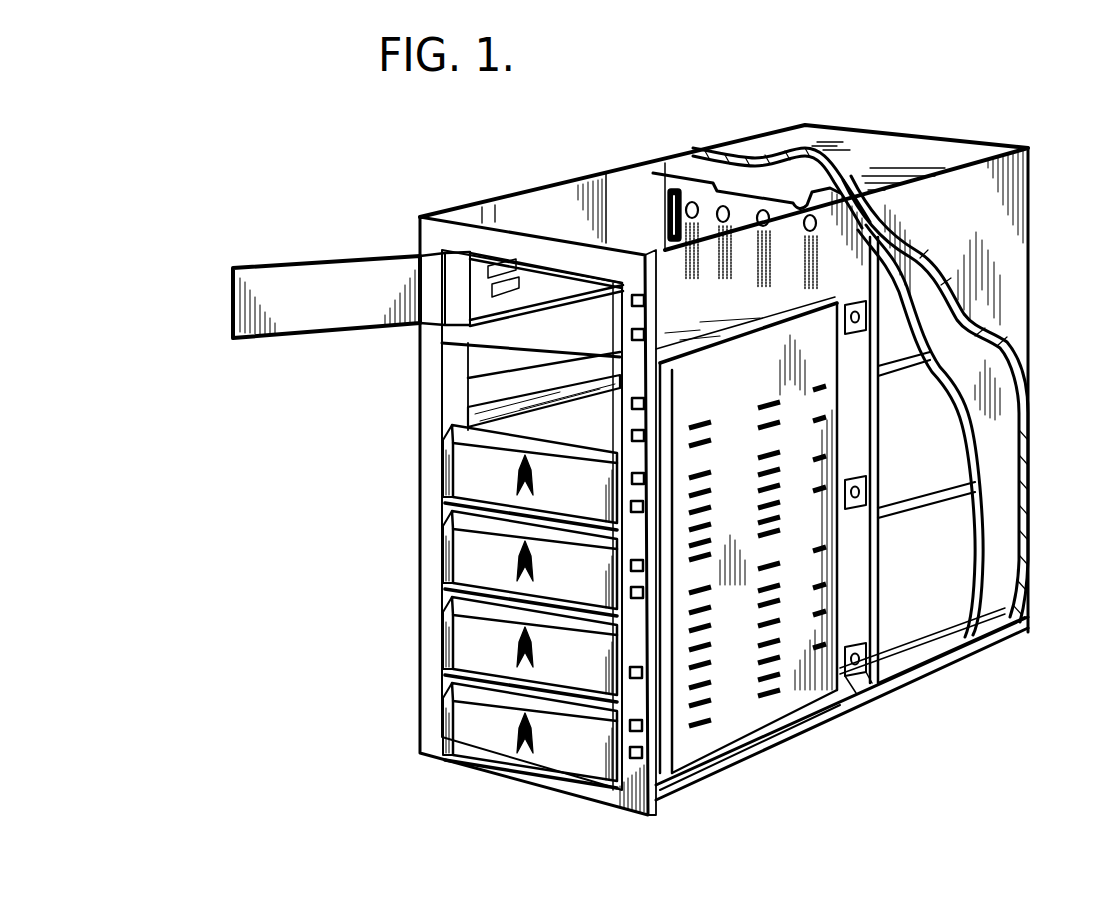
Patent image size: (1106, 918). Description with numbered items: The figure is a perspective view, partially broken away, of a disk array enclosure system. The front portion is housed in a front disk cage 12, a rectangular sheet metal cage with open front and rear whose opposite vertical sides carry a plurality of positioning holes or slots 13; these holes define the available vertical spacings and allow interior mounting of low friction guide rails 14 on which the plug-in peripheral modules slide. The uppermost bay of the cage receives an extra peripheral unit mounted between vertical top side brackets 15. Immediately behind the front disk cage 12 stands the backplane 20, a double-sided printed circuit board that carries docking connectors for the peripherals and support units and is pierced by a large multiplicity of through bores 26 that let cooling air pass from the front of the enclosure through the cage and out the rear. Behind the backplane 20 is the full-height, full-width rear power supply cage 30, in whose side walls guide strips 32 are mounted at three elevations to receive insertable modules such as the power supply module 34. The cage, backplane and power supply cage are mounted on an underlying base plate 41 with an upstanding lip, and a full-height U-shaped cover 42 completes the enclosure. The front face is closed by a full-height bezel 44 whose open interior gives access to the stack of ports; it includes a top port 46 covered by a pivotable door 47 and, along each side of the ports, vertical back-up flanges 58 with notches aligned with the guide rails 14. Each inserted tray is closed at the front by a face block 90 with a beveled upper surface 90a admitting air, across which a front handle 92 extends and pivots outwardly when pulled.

The front disk cage 12 is at (815, 684).
The positioning holes or slots 13 is at (769, 697).
The guide rails 14 is at (467, 410).
The vertical top side brackets 15 is at (557, 220).
The backplane 20 is at (912, 685).
The through bores 26 is at (691, 203).
The rear power supply cage 30 is at (987, 413).
The guide strips 32 is at (975, 498).
The power supply module 34 is at (957, 548).
The base plate 41 is at (990, 645).
The U-shaped cover 42 is at (947, 163).
The bezel 44 is at (430, 595).
The top port 46 is at (573, 337).
The pivotable door 47 is at (365, 258).
The vertical back-up flanges 58 is at (503, 457).
The face block 90 is at (507, 717).
The beveled upper surface 90a is at (470, 680).
The front handle 92 is at (573, 765).